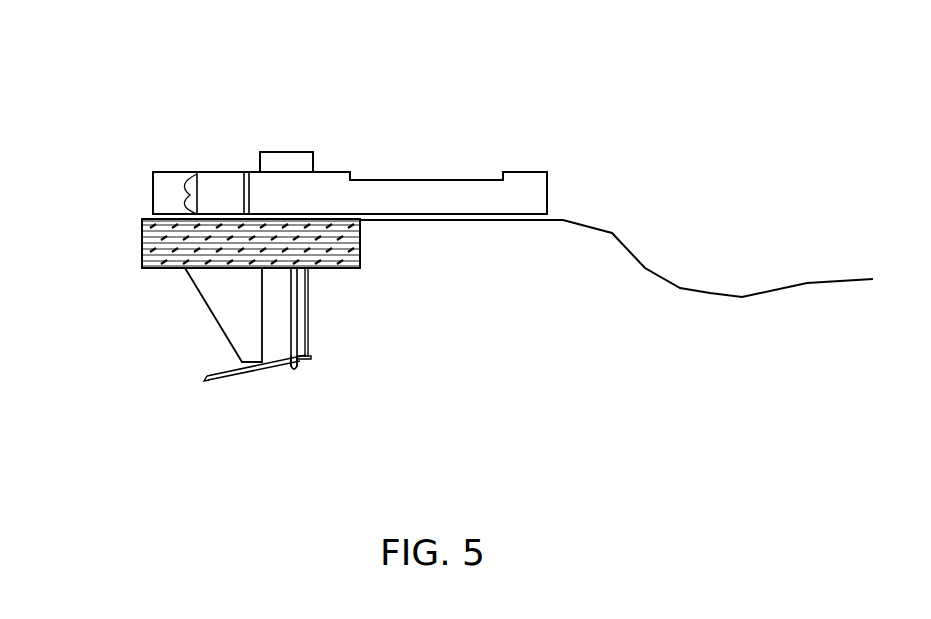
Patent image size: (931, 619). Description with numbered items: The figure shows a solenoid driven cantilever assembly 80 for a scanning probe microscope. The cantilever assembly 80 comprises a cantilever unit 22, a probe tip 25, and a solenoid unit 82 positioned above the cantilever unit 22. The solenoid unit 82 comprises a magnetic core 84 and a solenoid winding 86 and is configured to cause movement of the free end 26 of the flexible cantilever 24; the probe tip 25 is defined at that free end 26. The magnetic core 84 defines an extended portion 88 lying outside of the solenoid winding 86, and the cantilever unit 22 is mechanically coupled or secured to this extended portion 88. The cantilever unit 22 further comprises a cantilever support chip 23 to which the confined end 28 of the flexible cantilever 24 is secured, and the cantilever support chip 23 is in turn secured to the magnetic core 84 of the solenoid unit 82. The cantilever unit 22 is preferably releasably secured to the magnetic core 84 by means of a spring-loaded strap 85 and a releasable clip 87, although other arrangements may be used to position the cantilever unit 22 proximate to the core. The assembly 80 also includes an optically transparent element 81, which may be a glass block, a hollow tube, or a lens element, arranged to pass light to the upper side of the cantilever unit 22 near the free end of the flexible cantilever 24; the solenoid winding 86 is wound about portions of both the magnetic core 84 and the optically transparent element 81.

The solenoid driven cantilever assembly 80 is at (652, 86).
The releasable clip 87 is at (283, 152).
The solenoid winding 86 is at (147, 219).
The solenoid unit 82 is at (116, 218).
The optically transparent element 81 is at (193, 274).
The extended portion 88 is at (283, 285).
The magnetic core 84 is at (307, 311).
The spring-loaded strap 85 is at (302, 371).
The cantilever support chip 23 is at (307, 357).
The cantilever unit 22 is at (326, 373).
The flexible cantilever 24 is at (223, 378).
The probe tip 25 is at (208, 378).
The free end 26 is at (198, 364).
The confined end 28 is at (264, 384).